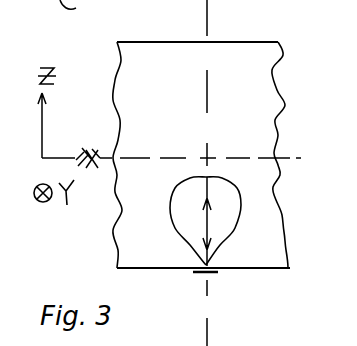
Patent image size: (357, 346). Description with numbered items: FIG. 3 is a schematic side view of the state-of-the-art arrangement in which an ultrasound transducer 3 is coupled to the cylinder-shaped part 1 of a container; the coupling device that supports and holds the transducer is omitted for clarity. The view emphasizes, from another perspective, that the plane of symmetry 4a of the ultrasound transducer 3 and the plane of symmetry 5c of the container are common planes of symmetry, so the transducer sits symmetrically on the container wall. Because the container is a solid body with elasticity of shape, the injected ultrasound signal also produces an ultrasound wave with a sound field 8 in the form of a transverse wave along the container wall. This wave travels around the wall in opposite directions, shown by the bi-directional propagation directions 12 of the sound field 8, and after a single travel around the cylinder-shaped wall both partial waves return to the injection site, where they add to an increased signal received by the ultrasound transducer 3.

The cylinder-shaped part 1 is at (214, 168).
The ultrasound transducer 3 is at (208, 280).
The plane of symmetry 4a is at (202, 23).
The center plane 5c is at (288, 155).
The sound field 8 is at (240, 203).
The bi-directional propagation directions 12 is at (204, 226).